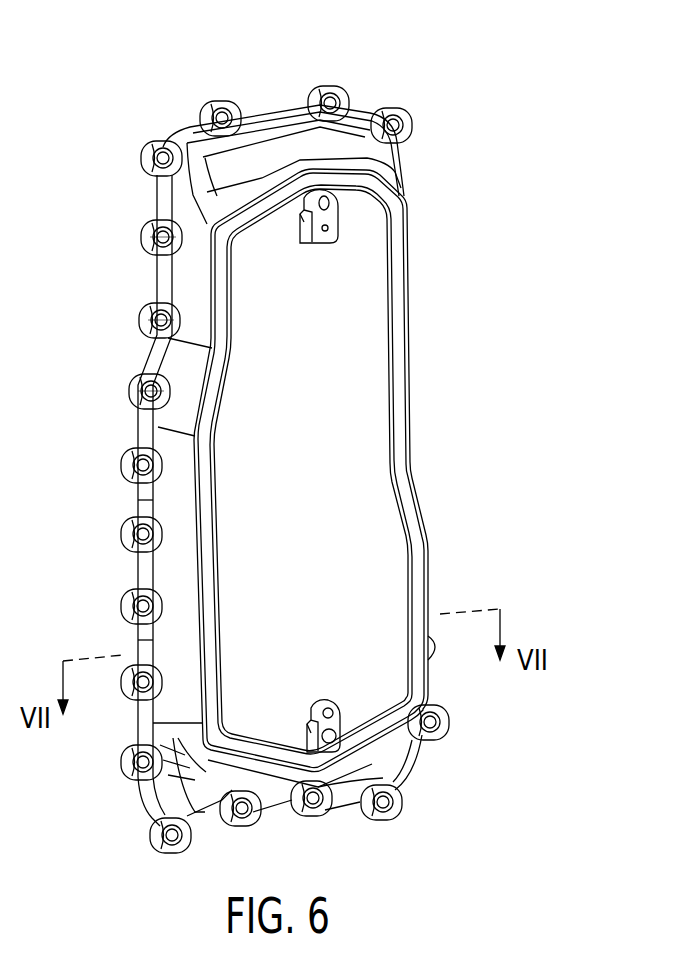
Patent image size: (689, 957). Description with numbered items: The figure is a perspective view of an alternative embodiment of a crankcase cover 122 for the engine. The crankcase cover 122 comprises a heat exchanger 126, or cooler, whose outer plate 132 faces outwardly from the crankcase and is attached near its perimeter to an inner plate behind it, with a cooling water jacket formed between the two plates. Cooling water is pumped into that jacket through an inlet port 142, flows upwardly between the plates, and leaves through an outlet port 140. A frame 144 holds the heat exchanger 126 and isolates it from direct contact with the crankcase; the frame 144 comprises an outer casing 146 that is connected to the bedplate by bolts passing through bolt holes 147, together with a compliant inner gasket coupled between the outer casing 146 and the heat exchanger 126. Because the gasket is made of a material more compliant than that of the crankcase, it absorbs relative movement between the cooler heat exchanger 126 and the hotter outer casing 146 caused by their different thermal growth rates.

The crankcase cover 122 is at (450, 52).
The heat exchanger 126 is at (366, 508).
The outer plate 132 is at (358, 393).
The outlet port 140 is at (332, 208).
The inlet port 142 is at (340, 733).
The frame 144 is at (172, 643).
The outer casing 146 is at (165, 500).
The bolt holes 147 is at (157, 240).